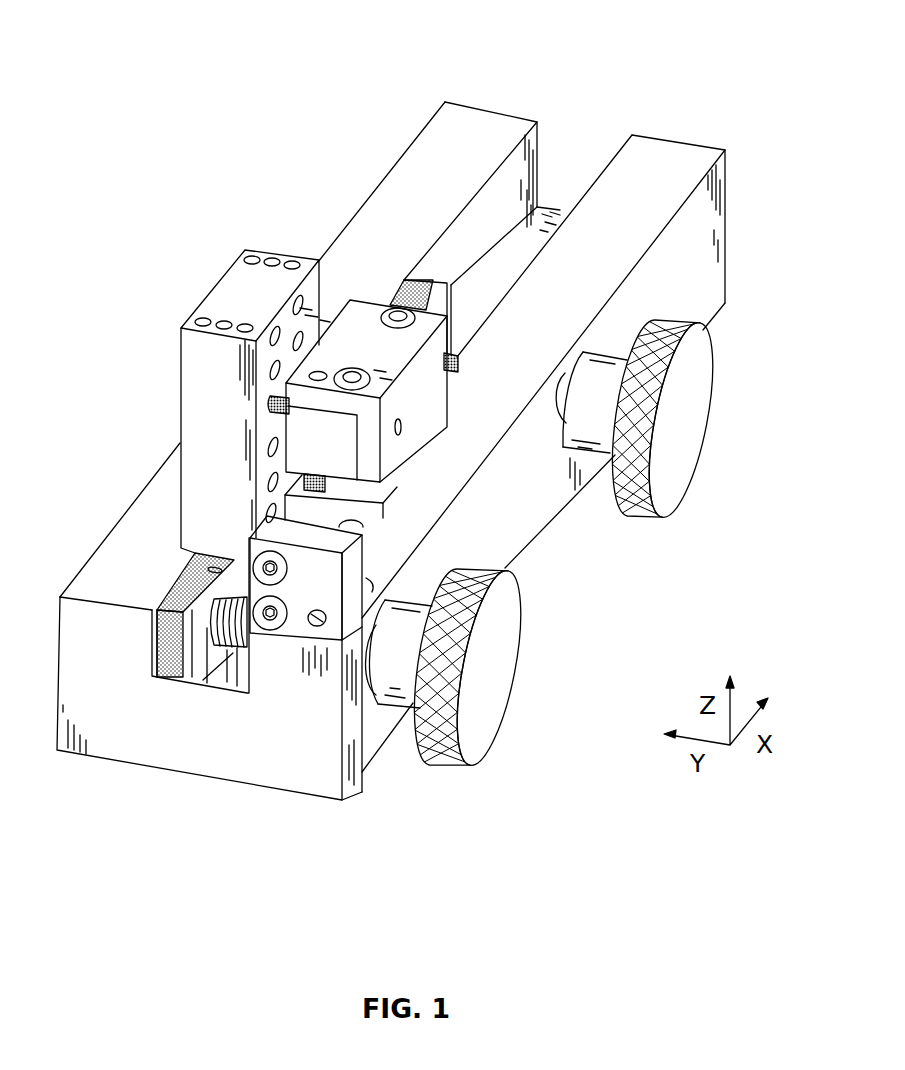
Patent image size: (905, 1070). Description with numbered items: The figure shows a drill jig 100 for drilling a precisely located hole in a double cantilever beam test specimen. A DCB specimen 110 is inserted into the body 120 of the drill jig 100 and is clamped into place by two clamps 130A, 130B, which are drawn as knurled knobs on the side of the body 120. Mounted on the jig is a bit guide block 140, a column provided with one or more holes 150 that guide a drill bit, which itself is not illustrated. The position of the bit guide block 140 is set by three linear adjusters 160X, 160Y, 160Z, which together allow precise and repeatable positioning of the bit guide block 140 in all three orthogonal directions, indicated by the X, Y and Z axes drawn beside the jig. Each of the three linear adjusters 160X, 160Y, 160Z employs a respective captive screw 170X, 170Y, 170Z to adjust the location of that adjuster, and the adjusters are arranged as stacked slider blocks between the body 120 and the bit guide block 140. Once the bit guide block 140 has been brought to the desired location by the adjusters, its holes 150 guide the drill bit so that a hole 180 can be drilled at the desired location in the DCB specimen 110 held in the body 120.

The drill jig 100 is at (371, 46).
The DCB specimen 110 is at (167, 667).
The body 120 is at (107, 567).
The clamp 130A is at (493, 666).
The clamp 130B is at (685, 423).
The bit guide block 140 is at (223, 292).
The holes 150 is at (292, 263).
The linear adjuster 160X is at (372, 583).
The linear adjuster 160Y is at (270, 403).
The linear adjuster 160Z is at (325, 485).
The captive screw 170X is at (318, 628).
The captive screw 170Y is at (400, 427).
The captive screw 170Z is at (320, 372).
The hole 180 is at (215, 567).